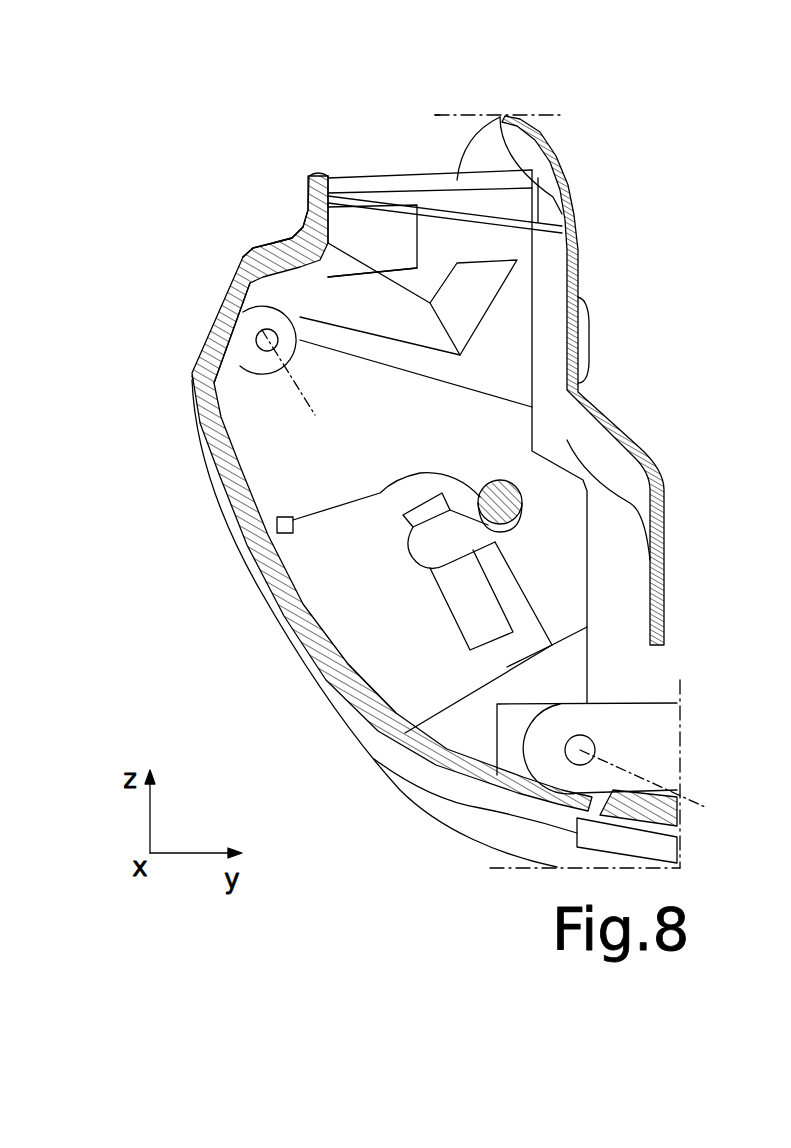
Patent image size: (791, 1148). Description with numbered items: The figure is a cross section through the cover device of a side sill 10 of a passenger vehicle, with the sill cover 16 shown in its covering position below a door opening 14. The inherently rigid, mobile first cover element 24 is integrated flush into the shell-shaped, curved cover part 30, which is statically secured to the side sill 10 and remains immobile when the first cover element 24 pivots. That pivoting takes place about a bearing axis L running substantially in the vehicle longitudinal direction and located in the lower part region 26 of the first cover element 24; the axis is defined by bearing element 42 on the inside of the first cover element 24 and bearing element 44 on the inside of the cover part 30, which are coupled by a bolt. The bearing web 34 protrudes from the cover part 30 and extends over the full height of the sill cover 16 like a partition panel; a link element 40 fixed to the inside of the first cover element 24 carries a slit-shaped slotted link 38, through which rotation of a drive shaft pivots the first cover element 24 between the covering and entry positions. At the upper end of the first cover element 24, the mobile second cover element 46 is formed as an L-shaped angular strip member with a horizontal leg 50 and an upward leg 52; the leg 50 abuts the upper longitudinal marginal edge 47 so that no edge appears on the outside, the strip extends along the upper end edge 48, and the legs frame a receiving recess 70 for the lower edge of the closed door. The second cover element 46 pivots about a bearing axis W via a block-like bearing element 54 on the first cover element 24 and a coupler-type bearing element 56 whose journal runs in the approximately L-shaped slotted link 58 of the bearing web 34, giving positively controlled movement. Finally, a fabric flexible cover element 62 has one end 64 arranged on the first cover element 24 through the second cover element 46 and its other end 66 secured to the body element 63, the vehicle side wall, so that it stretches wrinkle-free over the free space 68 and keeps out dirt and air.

The side sill 10 is at (208, 624).
The door opening 14 is at (625, 133).
The sill cover 16 is at (440, 183).
The first cover element 24 is at (238, 460).
The lower part region 26 is at (447, 767).
The cover part 30 is at (677, 813).
The bearing web 34 is at (290, 500).
The slotted link 38 is at (468, 602).
The link element 40 is at (403, 683).
The bearing element 42 is at (513, 730).
The bearing element 44 is at (653, 740).
The second cover element 46 is at (274, 227).
The upper longitudinal marginal edge 47 is at (220, 287).
The upper end edge 48 is at (310, 183).
The leg 50 is at (247, 254).
The leg 52 is at (340, 213).
The bearing element 54 is at (240, 352).
The bearing element 56 is at (305, 345).
The slotted link 58 is at (423, 323).
The flexible cover element 62 is at (500, 117).
The body element 63 is at (567, 173).
The one end 64 is at (328, 182).
The other end 66 is at (567, 223).
The free space 68 is at (433, 456).
The receiving recess 70 is at (286, 209).
The bearing axis W is at (295, 390).
The bearing axis L is at (652, 788).